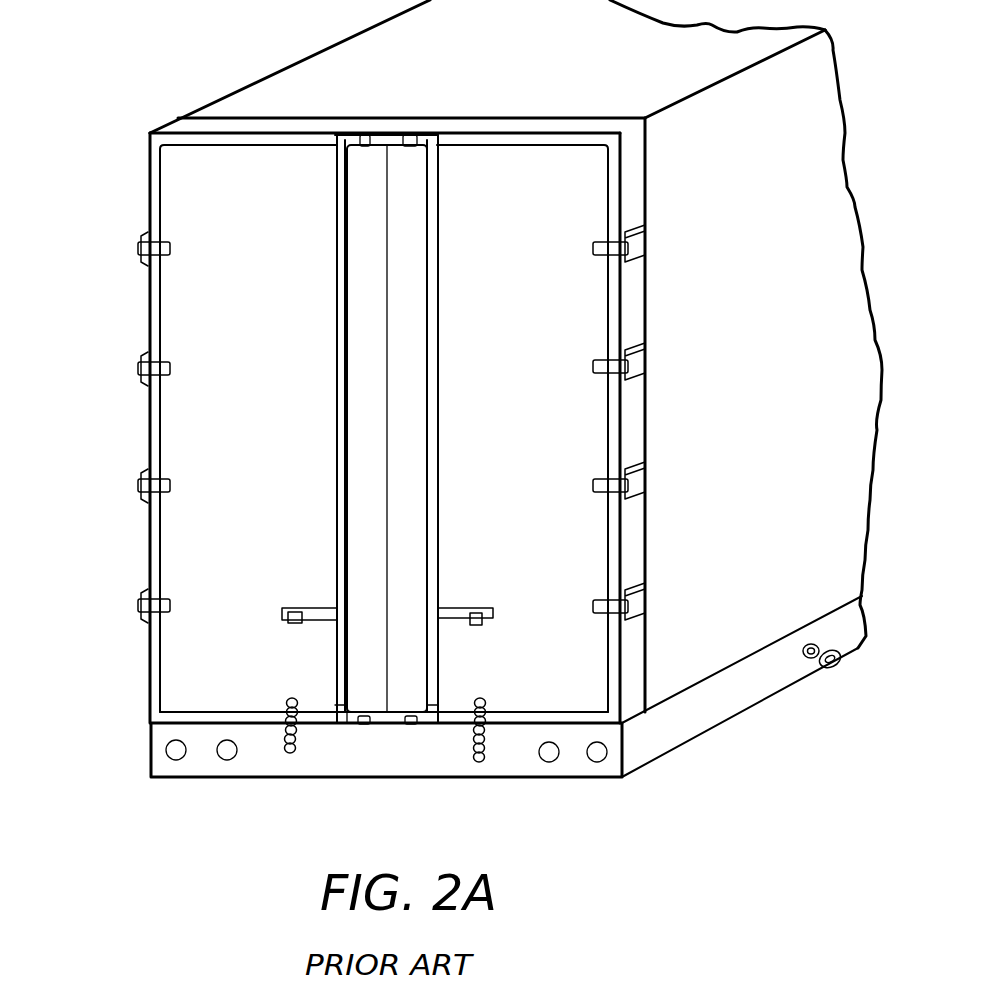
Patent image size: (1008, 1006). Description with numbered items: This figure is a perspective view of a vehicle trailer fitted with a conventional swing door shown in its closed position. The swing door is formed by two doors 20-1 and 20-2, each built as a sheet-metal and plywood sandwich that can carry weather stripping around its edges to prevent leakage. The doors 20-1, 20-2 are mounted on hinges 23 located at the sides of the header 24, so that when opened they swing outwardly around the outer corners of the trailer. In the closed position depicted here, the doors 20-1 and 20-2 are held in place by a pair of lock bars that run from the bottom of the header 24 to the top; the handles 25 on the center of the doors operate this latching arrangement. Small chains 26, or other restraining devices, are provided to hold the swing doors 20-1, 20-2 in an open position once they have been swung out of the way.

The door 20-1 is at (248, 428).
The door 20-2 is at (522, 428).
The hinges 23 is at (137, 265).
The header 24 is at (625, 192).
The door handles 25 is at (328, 585).
The small chains 26 is at (468, 747).